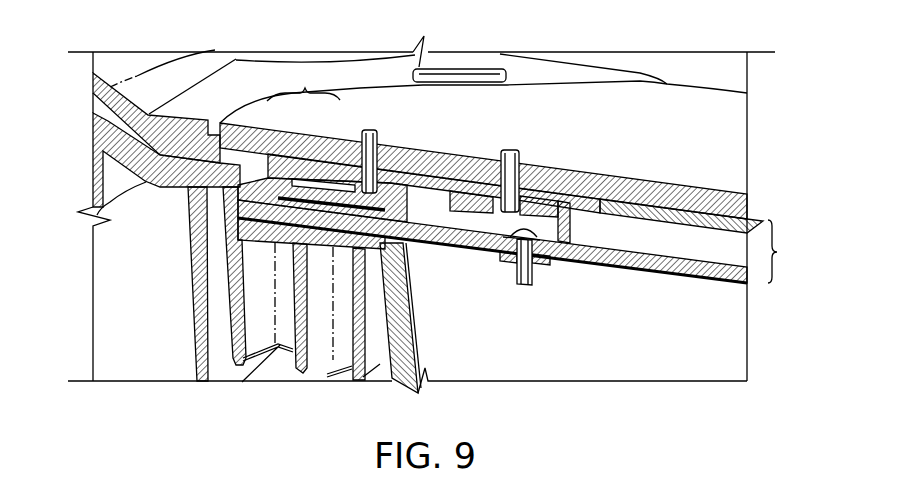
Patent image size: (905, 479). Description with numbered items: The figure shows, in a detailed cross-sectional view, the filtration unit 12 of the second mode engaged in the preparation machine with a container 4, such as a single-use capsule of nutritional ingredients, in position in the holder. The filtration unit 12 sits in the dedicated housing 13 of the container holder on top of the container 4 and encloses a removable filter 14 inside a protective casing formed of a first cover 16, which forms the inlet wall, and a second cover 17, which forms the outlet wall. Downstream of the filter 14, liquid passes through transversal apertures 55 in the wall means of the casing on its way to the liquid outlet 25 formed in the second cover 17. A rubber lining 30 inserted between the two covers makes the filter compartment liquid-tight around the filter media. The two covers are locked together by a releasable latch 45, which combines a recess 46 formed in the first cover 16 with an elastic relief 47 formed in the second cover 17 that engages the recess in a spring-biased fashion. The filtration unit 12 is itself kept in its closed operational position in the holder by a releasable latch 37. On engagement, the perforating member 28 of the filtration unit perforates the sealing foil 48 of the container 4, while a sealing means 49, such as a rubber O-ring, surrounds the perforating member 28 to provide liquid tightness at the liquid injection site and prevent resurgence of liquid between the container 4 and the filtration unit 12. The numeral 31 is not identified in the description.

The container 4 is at (432, 347).
The filtration unit 12 is at (785, 251).
The dedicated housing 13 is at (278, 346).
The filter 14 is at (298, 207).
The first cover 16 is at (586, 107).
The second cover 17 is at (710, 284).
The liquid outlet 25 is at (508, 242).
The perforating member 28 is at (528, 288).
The rubber lining 30 is at (440, 242).
The connecting plate 31 is at (380, 255).
The releasable latch 37 is at (221, 236).
The releasable latch 45 is at (303, 83).
The recess 46 is at (315, 138).
The relief 47 is at (282, 138).
The sealing foil 48 is at (666, 274).
The sealing means 49 is at (543, 265).
The transversal apertures 55 is at (480, 248).